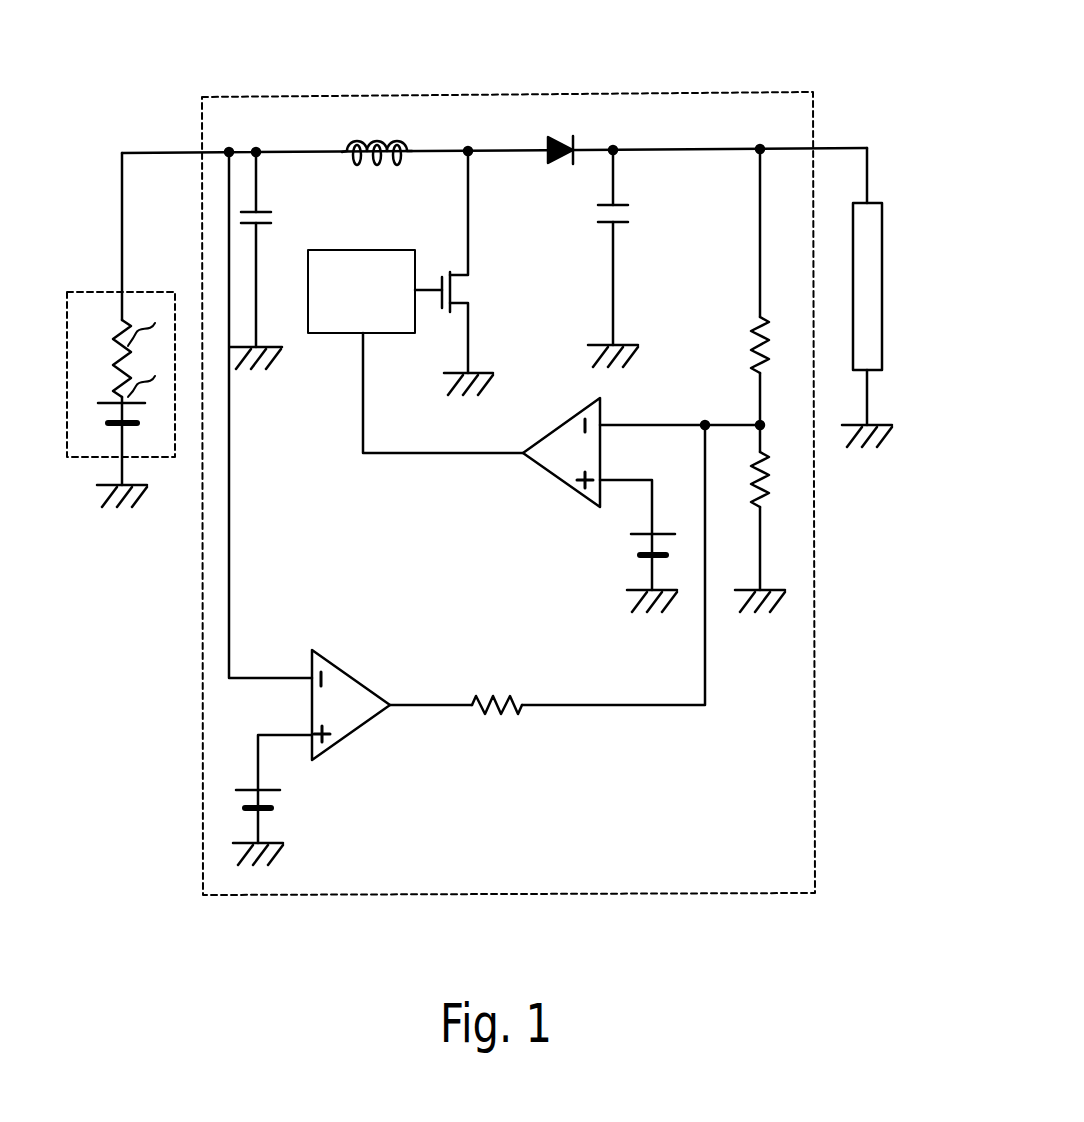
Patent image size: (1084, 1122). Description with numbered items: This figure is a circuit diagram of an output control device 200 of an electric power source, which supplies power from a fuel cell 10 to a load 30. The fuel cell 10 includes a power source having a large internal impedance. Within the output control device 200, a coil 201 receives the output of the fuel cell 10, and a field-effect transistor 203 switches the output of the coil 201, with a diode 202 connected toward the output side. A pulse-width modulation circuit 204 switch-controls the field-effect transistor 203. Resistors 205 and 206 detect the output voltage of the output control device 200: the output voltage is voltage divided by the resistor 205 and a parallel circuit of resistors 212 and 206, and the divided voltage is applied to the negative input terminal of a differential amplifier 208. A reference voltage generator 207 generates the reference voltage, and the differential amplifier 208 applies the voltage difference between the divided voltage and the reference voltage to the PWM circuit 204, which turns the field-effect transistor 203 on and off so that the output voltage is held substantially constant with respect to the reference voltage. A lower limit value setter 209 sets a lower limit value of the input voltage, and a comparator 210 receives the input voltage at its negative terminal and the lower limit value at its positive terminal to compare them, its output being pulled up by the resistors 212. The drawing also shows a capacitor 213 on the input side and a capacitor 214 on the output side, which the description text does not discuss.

The fuel cell 10 is at (137, 292).
The load 30 is at (873, 203).
The output control device 200 is at (682, 90).
The coil 201 is at (385, 140).
The diode 202 is at (562, 140).
The field-effect transistor 203 is at (462, 277).
The pulse-width modulation (PWM) circuit 204 is at (338, 250).
The resistor 205 is at (762, 324).
The resistor 206 is at (766, 462).
The reference voltage generator 207 is at (656, 532).
The differential amplifier 208 is at (578, 412).
The lower limit value setter 209 is at (262, 786).
The comparator 210 is at (337, 667).
The resistor 212 is at (504, 697).
The input capacitor 213 is at (262, 207).
The output capacitor 214 is at (620, 205).